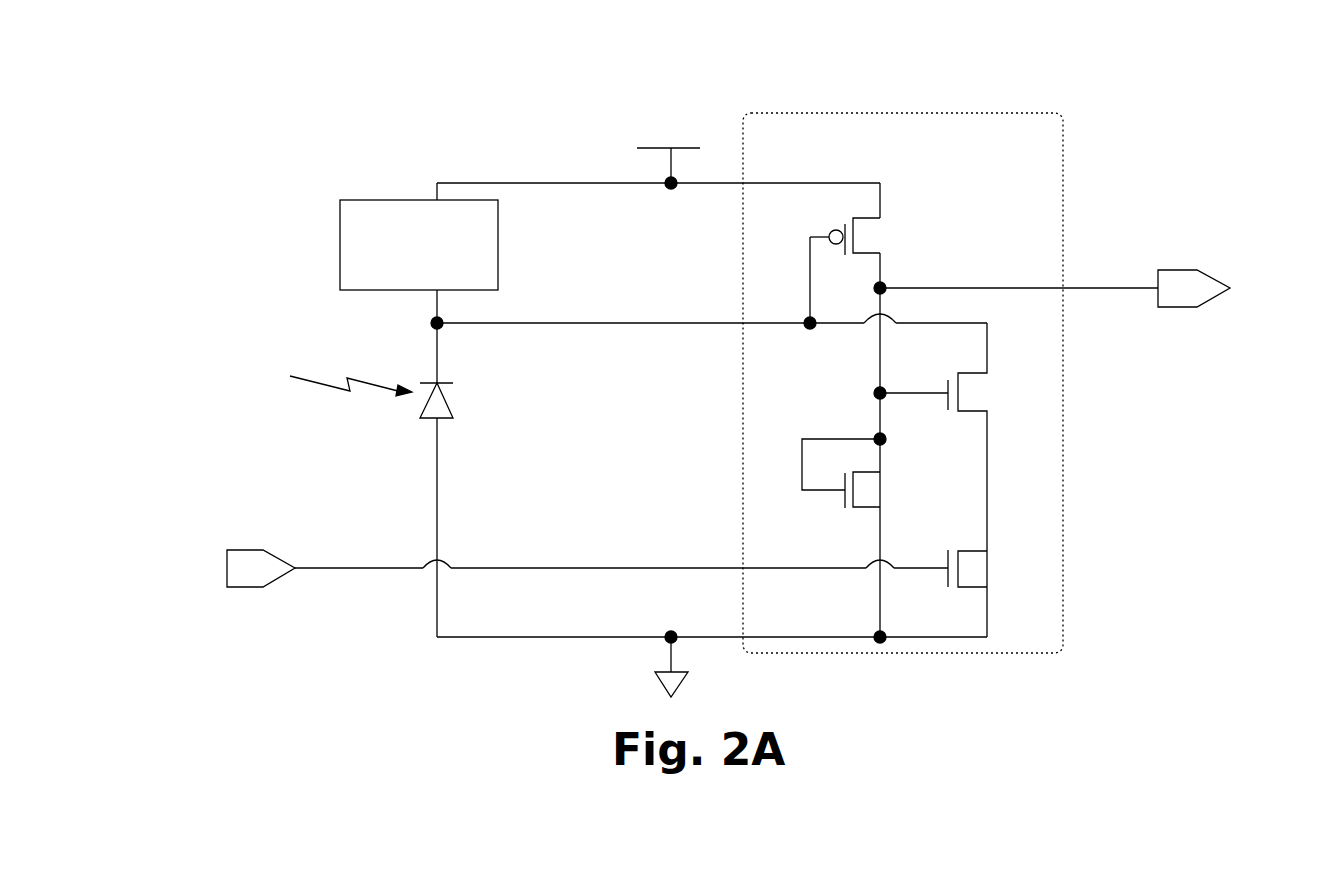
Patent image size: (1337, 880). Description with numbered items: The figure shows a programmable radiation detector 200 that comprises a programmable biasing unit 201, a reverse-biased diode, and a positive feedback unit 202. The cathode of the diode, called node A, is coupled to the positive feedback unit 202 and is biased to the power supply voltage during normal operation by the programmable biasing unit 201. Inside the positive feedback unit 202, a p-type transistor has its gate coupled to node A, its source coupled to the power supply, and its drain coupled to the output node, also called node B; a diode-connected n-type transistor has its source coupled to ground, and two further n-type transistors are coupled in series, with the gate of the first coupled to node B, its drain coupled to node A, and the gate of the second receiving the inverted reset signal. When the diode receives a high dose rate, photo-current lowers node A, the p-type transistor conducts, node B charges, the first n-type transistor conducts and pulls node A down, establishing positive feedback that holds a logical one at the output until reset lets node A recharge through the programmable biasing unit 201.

The programmable radiation detector 200 is at (684, 36).
The programmable biasing unit 201 is at (343, 200).
The positive feedback unit 202 is at (1045, 130).